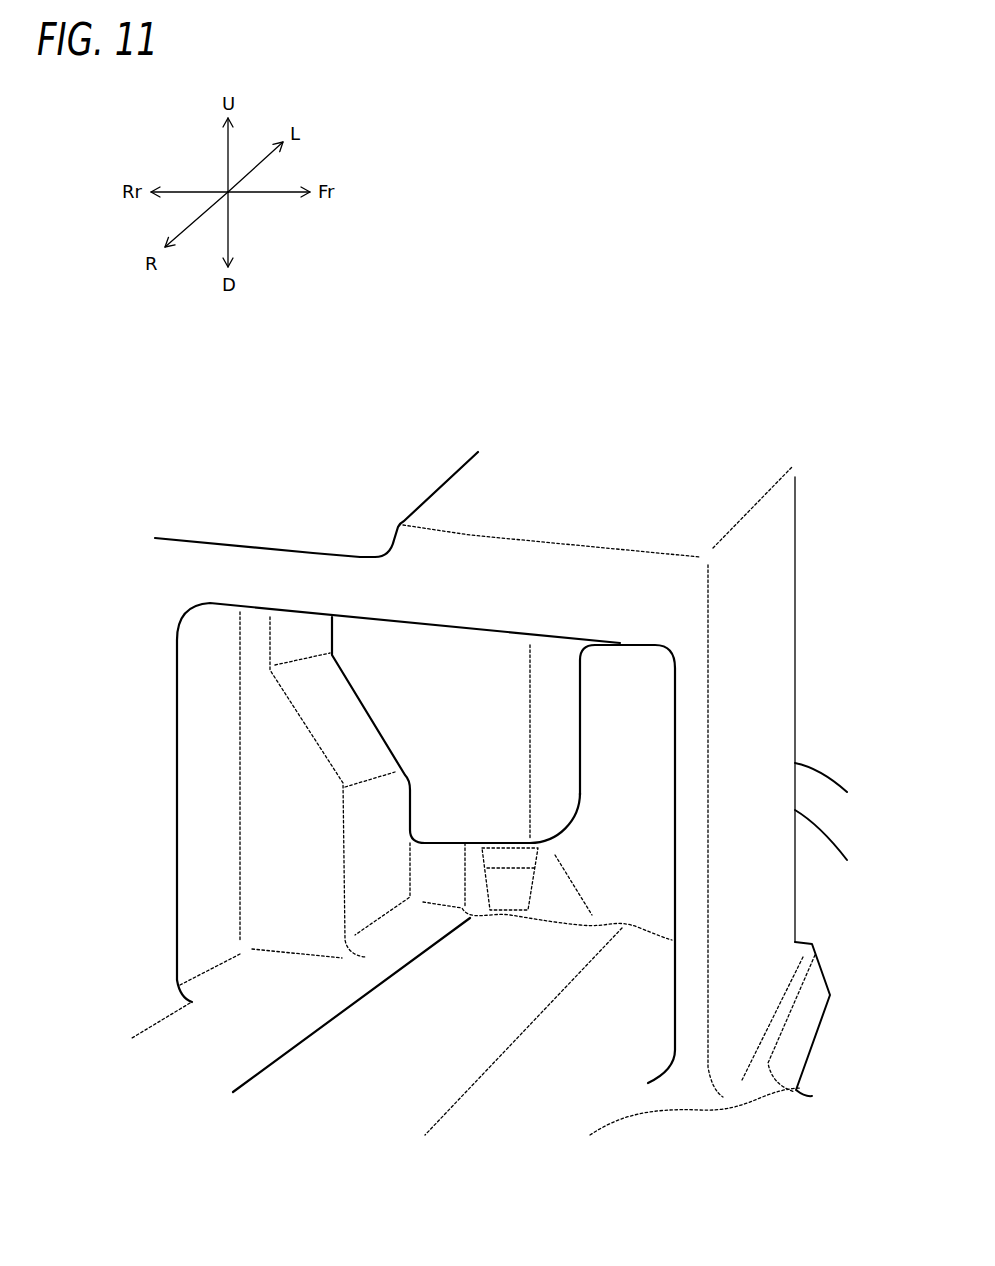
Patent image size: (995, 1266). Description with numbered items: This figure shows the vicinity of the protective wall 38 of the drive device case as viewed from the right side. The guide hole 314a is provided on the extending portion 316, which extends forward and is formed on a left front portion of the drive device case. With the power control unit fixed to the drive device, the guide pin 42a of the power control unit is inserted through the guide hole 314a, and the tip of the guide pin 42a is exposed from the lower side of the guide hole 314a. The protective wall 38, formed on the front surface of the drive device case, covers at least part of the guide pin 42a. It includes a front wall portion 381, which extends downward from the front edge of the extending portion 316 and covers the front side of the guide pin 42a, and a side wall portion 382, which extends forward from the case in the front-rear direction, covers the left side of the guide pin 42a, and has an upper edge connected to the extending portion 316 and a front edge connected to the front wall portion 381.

The extending portion 316 is at (550, 522).
The guide hole 314a is at (510, 757).
The protective wall 38 is at (752, 587).
The front wall portion 381 is at (728, 760).
The side wall portion 382 is at (638, 738).
The guide pin 42a is at (474, 920).